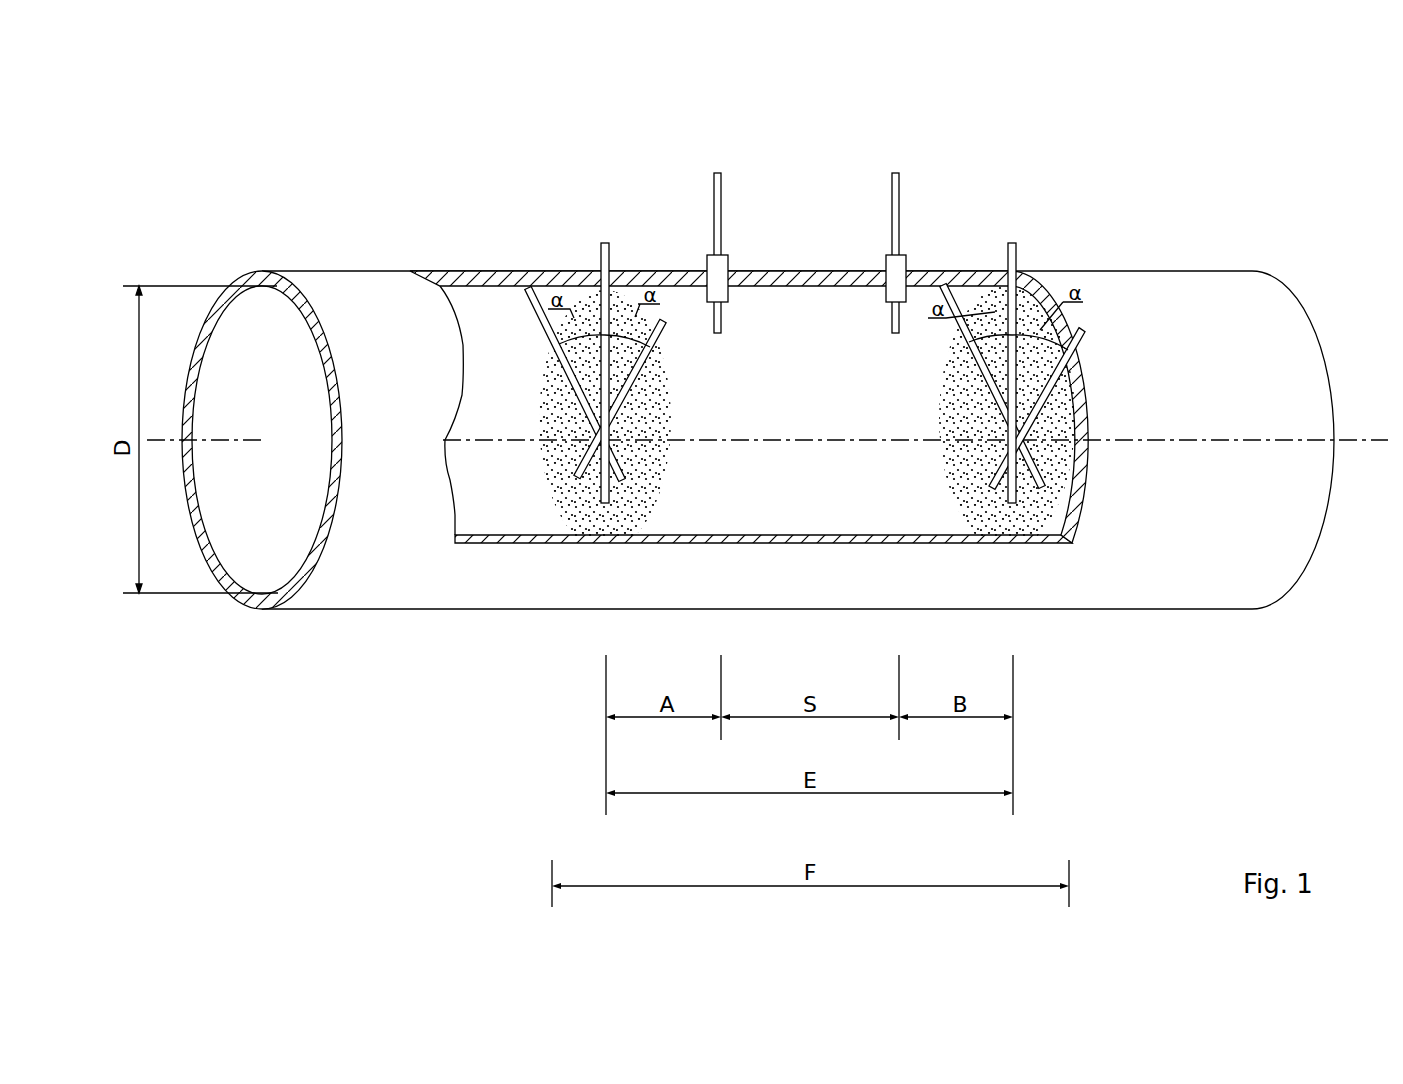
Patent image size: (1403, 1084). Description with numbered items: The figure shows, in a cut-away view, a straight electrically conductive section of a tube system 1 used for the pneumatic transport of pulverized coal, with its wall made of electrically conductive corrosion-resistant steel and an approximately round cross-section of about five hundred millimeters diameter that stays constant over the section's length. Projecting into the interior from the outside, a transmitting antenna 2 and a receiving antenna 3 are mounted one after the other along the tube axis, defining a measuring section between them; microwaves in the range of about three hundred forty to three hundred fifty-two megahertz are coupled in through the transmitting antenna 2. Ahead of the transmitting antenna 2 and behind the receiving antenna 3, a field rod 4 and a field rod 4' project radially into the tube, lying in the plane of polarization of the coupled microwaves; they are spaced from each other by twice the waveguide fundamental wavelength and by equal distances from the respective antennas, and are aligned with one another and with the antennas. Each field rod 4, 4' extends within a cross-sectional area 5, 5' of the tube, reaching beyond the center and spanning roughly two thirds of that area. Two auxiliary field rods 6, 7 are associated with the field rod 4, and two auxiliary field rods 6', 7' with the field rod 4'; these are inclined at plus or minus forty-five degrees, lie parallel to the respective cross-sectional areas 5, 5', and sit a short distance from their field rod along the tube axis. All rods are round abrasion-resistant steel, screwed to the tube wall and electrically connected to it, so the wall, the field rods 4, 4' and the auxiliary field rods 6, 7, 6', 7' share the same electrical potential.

The tube system 1 is at (1238, 299).
The transmitting antenna 2 is at (722, 177).
The receiving antenna 3 is at (900, 175).
The field rod 4 is at (626, 322).
The cross-sectional area 5 is at (605, 354).
The auxiliary field rod 6 is at (549, 321).
The auxiliary field rod 7 is at (638, 320).
The field rod 4' is at (1034, 322).
The cross-sectional area 5' is at (1022, 351).
The auxiliary field rod 6' is at (992, 324).
The auxiliary field rod 7' is at (1073, 322).